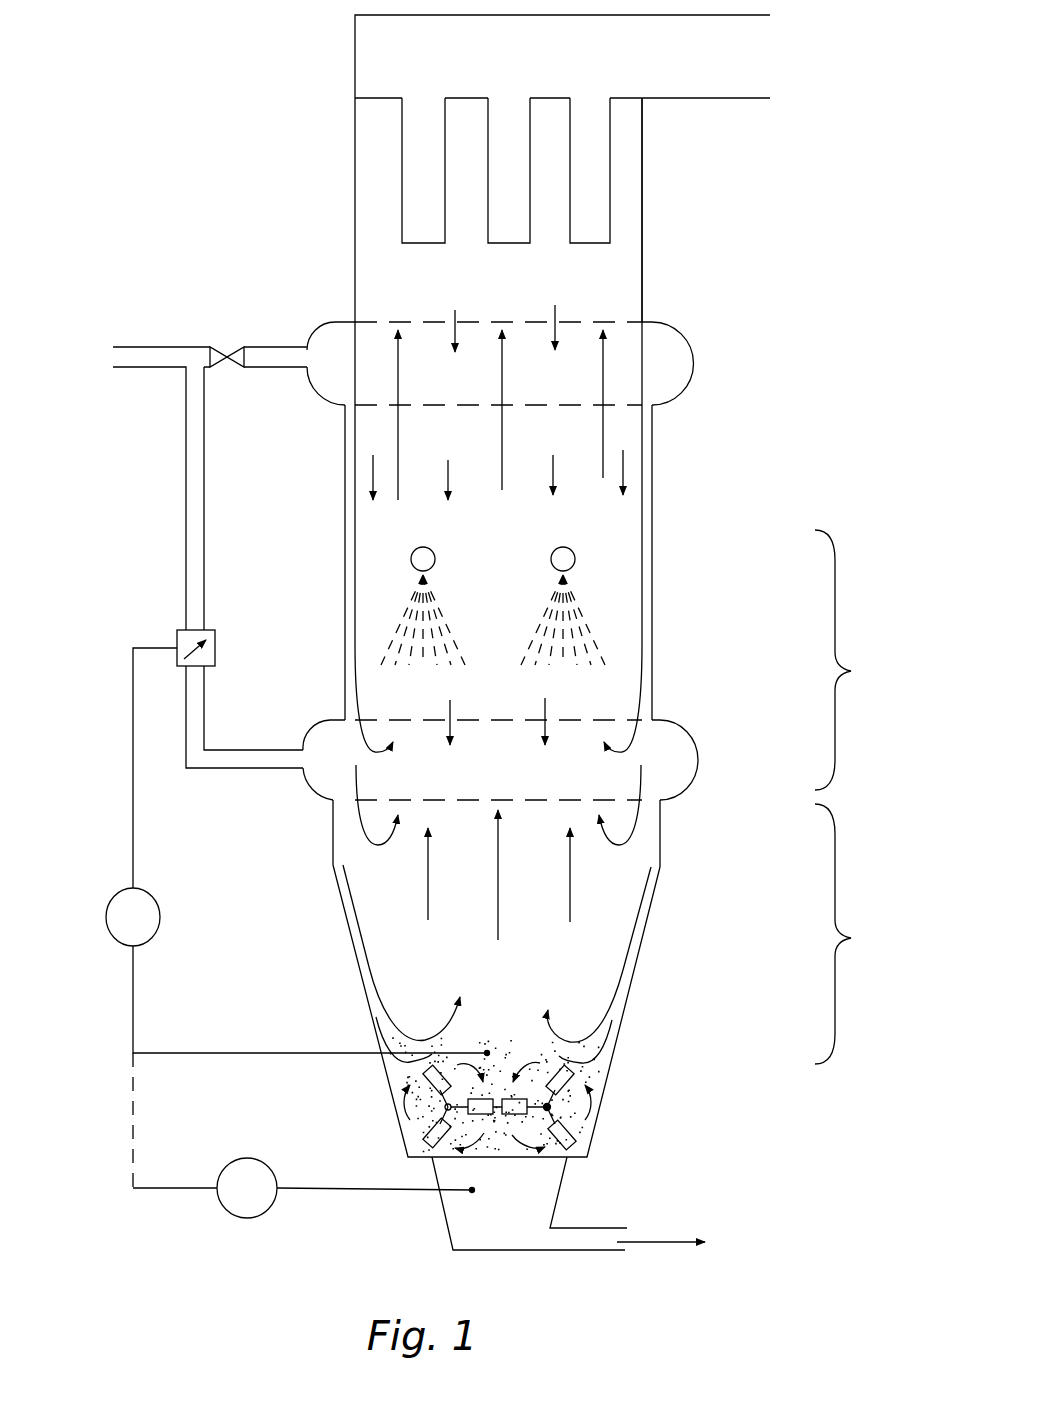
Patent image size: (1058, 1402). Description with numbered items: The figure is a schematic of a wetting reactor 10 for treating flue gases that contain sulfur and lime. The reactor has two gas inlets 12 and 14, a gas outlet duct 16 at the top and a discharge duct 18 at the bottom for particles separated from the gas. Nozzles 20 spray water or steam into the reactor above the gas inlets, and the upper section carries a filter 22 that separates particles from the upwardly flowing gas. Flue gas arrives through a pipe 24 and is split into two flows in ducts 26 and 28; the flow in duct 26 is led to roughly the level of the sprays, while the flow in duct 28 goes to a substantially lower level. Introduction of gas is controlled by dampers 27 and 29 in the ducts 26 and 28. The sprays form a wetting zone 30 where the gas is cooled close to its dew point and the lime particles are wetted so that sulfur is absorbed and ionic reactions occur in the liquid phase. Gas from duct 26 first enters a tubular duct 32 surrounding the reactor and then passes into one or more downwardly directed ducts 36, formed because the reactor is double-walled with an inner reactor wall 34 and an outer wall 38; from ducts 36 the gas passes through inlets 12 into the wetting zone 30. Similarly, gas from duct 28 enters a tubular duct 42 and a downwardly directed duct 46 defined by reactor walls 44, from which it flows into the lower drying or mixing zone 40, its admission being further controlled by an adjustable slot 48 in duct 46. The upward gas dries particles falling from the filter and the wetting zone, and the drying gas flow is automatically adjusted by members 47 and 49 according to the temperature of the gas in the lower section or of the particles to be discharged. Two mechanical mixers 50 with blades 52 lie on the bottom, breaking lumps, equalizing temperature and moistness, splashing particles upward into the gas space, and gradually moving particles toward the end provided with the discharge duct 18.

The wetting reactor 10 is at (258, 175).
The gas inlet 12 is at (650, 642).
The gas inlet 14 is at (633, 960).
The gas outlet duct 16 is at (712, 64).
The discharge duct 18 is at (516, 1216).
The nozzles 20 is at (565, 553).
The filter 22 is at (588, 213).
The pipe 24 is at (140, 349).
The duct 26 is at (257, 350).
The damper 27 is at (224, 354).
The duct 28 is at (242, 766).
The damper 29 is at (182, 635).
The wetting zone 30 is at (855, 660).
The tubular duct 32 is at (334, 341).
The reactor wall 34 is at (355, 560).
The downwardly directed duct 36 is at (348, 526).
The reactor wall 38 is at (345, 598).
The drying or mixing zone 40 is at (855, 934).
The tubular duct 42 is at (328, 743).
The reactor walls 44 is at (352, 893).
The downwardly directed duct 46 is at (348, 915).
The adjusting member 47 is at (150, 917).
The adjustable slot 48 is at (637, 942).
The adjusting member 49 is at (242, 1207).
The mechanical mixer 50 is at (557, 1107).
The blades 52 is at (575, 1137).